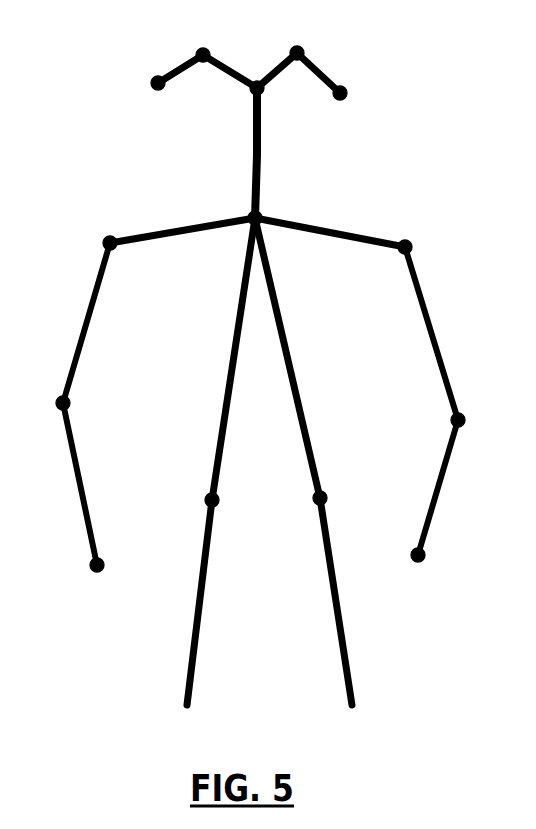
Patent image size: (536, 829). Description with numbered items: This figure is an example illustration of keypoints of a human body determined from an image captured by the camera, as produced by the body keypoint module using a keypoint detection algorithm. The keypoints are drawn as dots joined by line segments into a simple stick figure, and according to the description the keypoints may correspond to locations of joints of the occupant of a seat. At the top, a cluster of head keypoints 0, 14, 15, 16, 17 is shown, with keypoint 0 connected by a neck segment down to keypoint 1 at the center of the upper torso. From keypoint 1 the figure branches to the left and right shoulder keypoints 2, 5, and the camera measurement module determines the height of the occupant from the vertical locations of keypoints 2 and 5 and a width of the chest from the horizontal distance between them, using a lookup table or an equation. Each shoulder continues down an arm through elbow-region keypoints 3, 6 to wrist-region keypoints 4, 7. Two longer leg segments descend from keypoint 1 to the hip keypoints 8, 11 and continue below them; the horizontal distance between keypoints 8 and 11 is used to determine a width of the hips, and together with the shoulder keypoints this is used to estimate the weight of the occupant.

The neck joint keypoint 0 is at (243, 101).
The torso center keypoint 1 is at (242, 201).
The keypoint 2 is at (102, 223).
The left elbow keypoint 3 is at (51, 398).
The left wrist keypoint 4 is at (79, 570).
The keypoint 5 is at (413, 228).
The right elbow keypoint 6 is at (474, 405).
The right wrist keypoint 7 is at (435, 555).
The keypoint 8 is at (196, 500).
The keypoint 11 is at (342, 493).
The left eye keypoint 14 is at (197, 36).
The right eye keypoint 15 is at (300, 35).
The left ear keypoint 16 is at (134, 82).
The right ear keypoint 17 is at (366, 88).